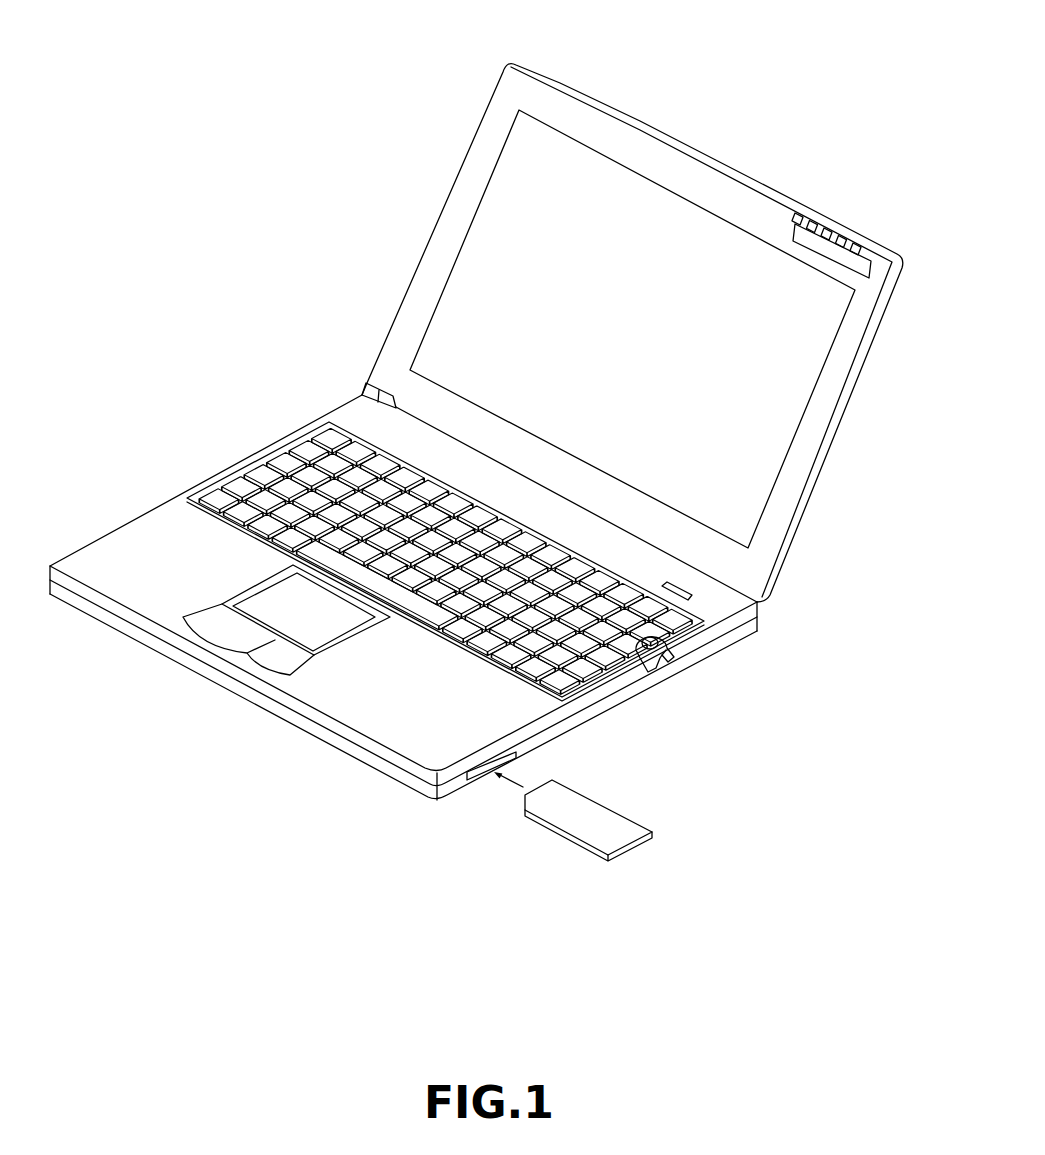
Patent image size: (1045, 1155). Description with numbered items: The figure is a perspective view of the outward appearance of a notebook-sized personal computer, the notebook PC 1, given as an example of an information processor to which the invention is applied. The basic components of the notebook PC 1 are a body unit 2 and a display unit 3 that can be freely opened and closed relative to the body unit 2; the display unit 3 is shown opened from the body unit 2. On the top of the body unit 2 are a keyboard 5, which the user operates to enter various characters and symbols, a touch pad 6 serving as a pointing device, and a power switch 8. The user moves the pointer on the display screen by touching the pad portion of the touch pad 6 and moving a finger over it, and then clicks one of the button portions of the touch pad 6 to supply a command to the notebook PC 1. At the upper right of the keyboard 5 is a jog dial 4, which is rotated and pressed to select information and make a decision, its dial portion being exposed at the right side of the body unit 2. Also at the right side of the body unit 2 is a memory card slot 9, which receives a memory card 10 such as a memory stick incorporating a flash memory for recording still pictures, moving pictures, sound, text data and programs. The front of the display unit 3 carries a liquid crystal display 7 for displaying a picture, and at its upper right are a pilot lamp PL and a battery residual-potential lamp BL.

The notebook PC 1 is at (713, 100).
The body unit 2 is at (620, 705).
The display unit 3 is at (857, 395).
The jog dial 4 is at (670, 660).
The keyboard 5 is at (260, 472).
The touch pad 6 is at (268, 613).
The liquid crystal display (LCD) 7 is at (758, 456).
The power switch 8 is at (693, 599).
The memory card slot 9 is at (474, 777).
The memory card 10 is at (580, 825).
The battery residual-potential lamp BL is at (845, 252).
The pilot lamp PL is at (871, 262).